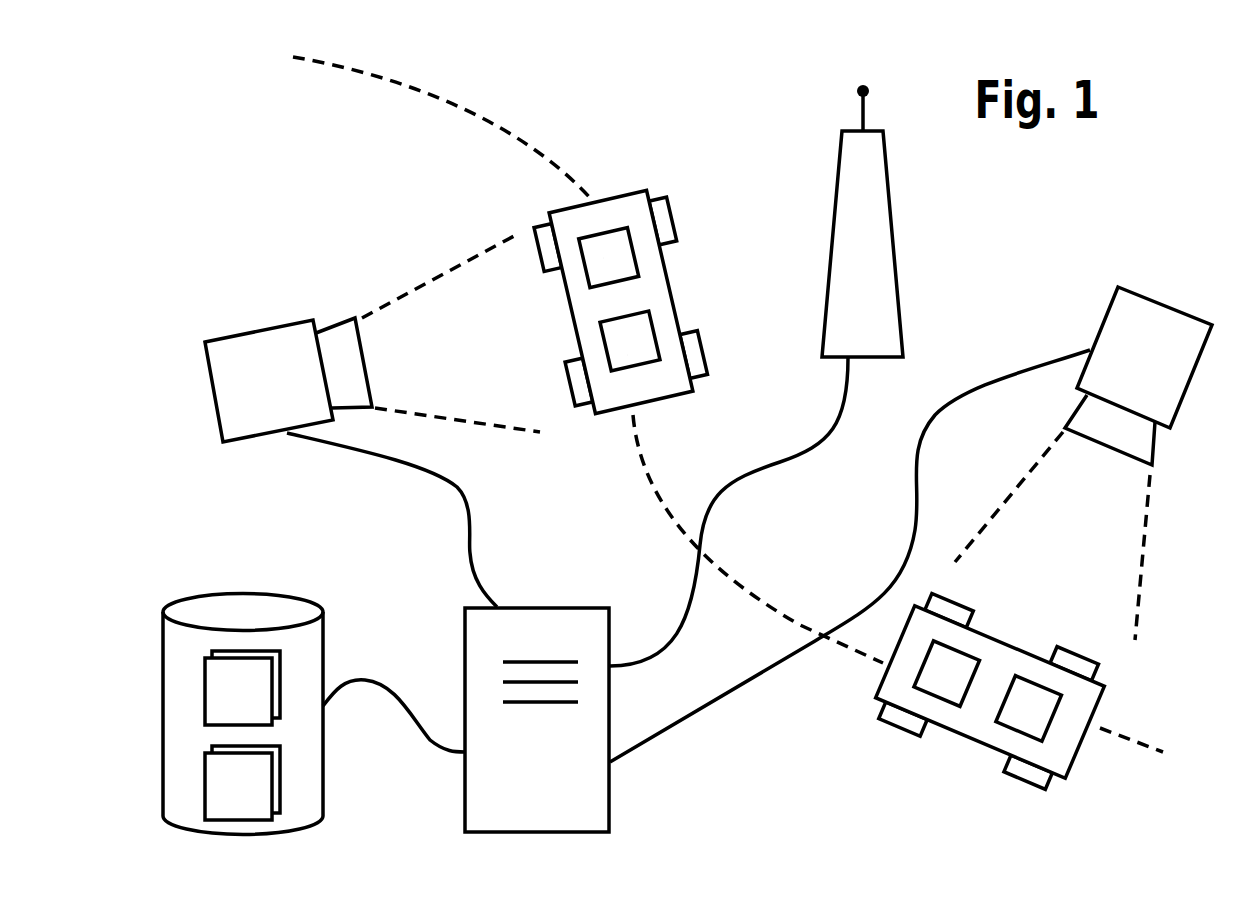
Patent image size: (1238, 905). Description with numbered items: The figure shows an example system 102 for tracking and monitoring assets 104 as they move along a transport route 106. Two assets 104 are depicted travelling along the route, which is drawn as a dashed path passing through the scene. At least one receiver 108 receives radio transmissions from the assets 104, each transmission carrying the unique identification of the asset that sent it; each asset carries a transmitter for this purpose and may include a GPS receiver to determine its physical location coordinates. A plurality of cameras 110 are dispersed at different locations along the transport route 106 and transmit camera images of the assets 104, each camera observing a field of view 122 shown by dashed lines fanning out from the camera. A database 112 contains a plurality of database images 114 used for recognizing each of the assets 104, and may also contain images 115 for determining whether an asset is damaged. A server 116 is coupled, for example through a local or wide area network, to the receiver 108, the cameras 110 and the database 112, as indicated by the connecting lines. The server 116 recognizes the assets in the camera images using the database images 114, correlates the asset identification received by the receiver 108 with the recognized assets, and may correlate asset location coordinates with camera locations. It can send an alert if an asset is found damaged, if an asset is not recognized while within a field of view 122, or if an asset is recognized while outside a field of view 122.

The system 102 is at (664, 76).
The asset 104 is at (822, 518).
The transport route 106 is at (397, 80).
The receiver 108 is at (891, 210).
The camera 110 is at (693, 411).
The database 112 is at (197, 654).
The database image 114 is at (230, 690).
The image for determining damage 115 is at (230, 785).
The server 116 is at (583, 802).
The field of view 122 is at (1005, 503).